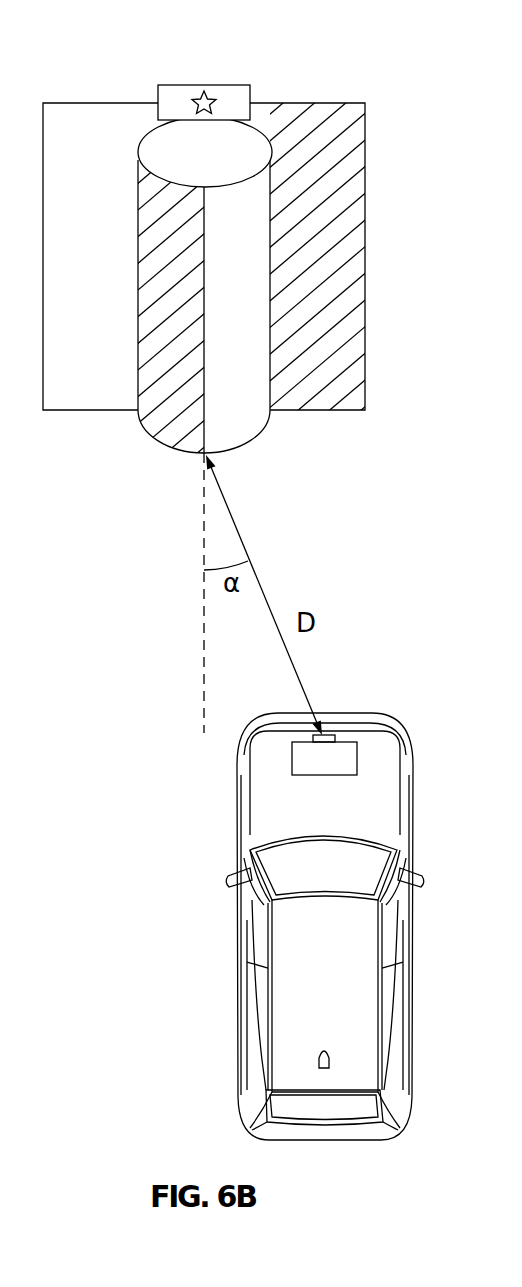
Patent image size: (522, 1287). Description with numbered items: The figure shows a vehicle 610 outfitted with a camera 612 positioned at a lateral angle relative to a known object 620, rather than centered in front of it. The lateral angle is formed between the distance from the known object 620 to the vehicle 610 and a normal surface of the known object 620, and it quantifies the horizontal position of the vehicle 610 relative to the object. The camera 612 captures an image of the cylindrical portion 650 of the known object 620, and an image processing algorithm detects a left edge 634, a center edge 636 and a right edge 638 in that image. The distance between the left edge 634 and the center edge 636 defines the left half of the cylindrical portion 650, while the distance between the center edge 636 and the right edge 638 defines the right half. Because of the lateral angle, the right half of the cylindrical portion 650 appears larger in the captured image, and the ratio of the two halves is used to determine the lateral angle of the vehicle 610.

The vehicle 610 is at (285, 909).
The camera 612 is at (352, 741).
The known object 620 is at (207, 366).
The left edge 634 is at (130, 431).
The center edge 636 is at (195, 468).
The right edge 638 is at (278, 431).
The cylindrical portion 650 is at (229, 163).